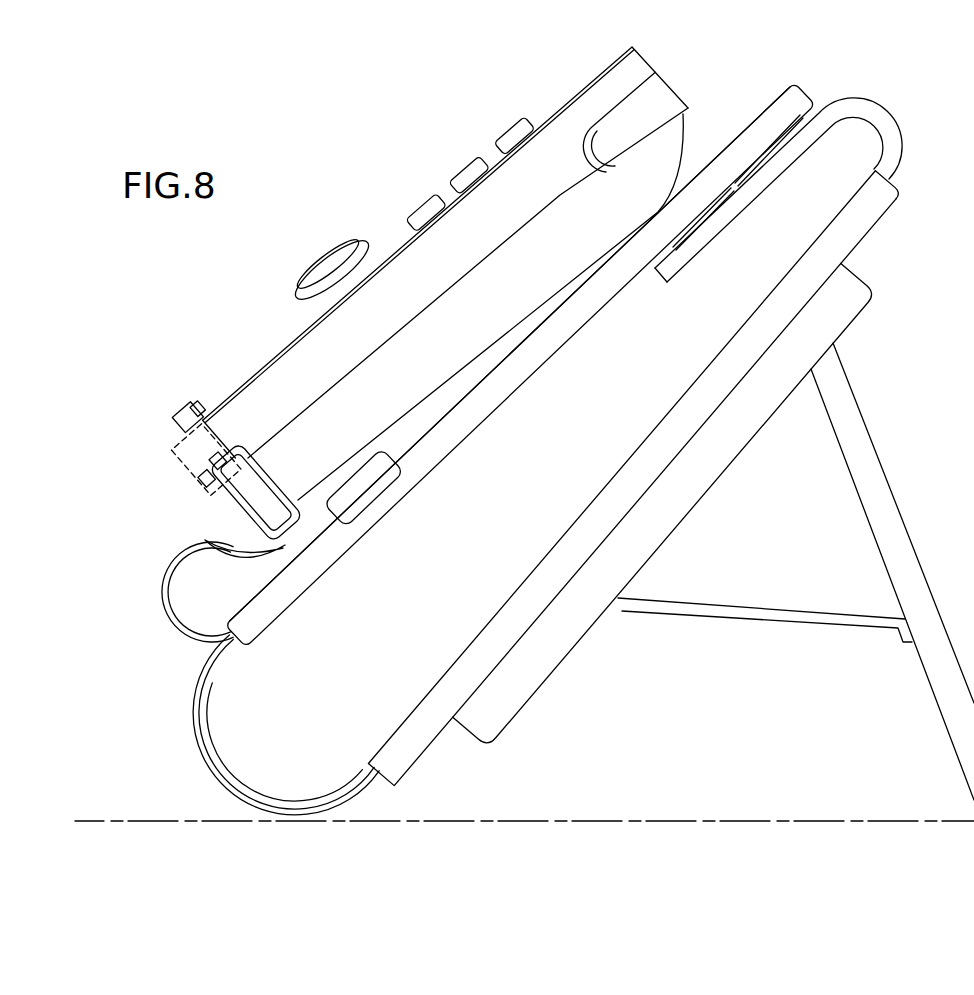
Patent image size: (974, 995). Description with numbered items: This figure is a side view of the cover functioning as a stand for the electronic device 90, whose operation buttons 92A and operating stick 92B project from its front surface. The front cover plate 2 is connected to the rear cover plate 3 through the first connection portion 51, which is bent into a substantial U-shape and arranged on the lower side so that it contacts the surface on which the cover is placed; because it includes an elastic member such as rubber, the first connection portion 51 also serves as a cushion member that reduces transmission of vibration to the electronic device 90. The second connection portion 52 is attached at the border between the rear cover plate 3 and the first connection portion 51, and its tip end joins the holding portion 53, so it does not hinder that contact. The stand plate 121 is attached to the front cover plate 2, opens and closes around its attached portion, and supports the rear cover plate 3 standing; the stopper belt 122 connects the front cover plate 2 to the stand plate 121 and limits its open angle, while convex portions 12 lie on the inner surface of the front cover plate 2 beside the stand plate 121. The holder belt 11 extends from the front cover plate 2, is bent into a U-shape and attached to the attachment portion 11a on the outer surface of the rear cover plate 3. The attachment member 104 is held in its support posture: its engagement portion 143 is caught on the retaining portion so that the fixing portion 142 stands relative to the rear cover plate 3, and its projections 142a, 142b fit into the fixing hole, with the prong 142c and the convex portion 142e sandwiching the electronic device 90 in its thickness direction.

The electronic device 90 is at (652, 58).
The operation buttons 92A is at (507, 130).
The operating stick 92B is at (325, 262).
The front cover plate 2 is at (857, 226).
The rear cover plate 3 is at (744, 134).
The holder belt 11 is at (876, 116).
The attachment portion 11a is at (708, 222).
The convex portion 12 is at (712, 472).
The stand plate 121 is at (880, 486).
The stopper belt 122 is at (742, 618).
The attachment member 104 is at (320, 540).
The engagement portion 143 is at (345, 490).
The fixing portion 142 is at (225, 498).
The projection 142a is at (180, 413).
The projection 142b is at (170, 452).
The prong 142c is at (200, 408).
The convex portion 142e is at (205, 482).
The holding portion 53 is at (224, 555).
The second connection portion 52 is at (163, 598).
The first connection portion 51 is at (192, 722).